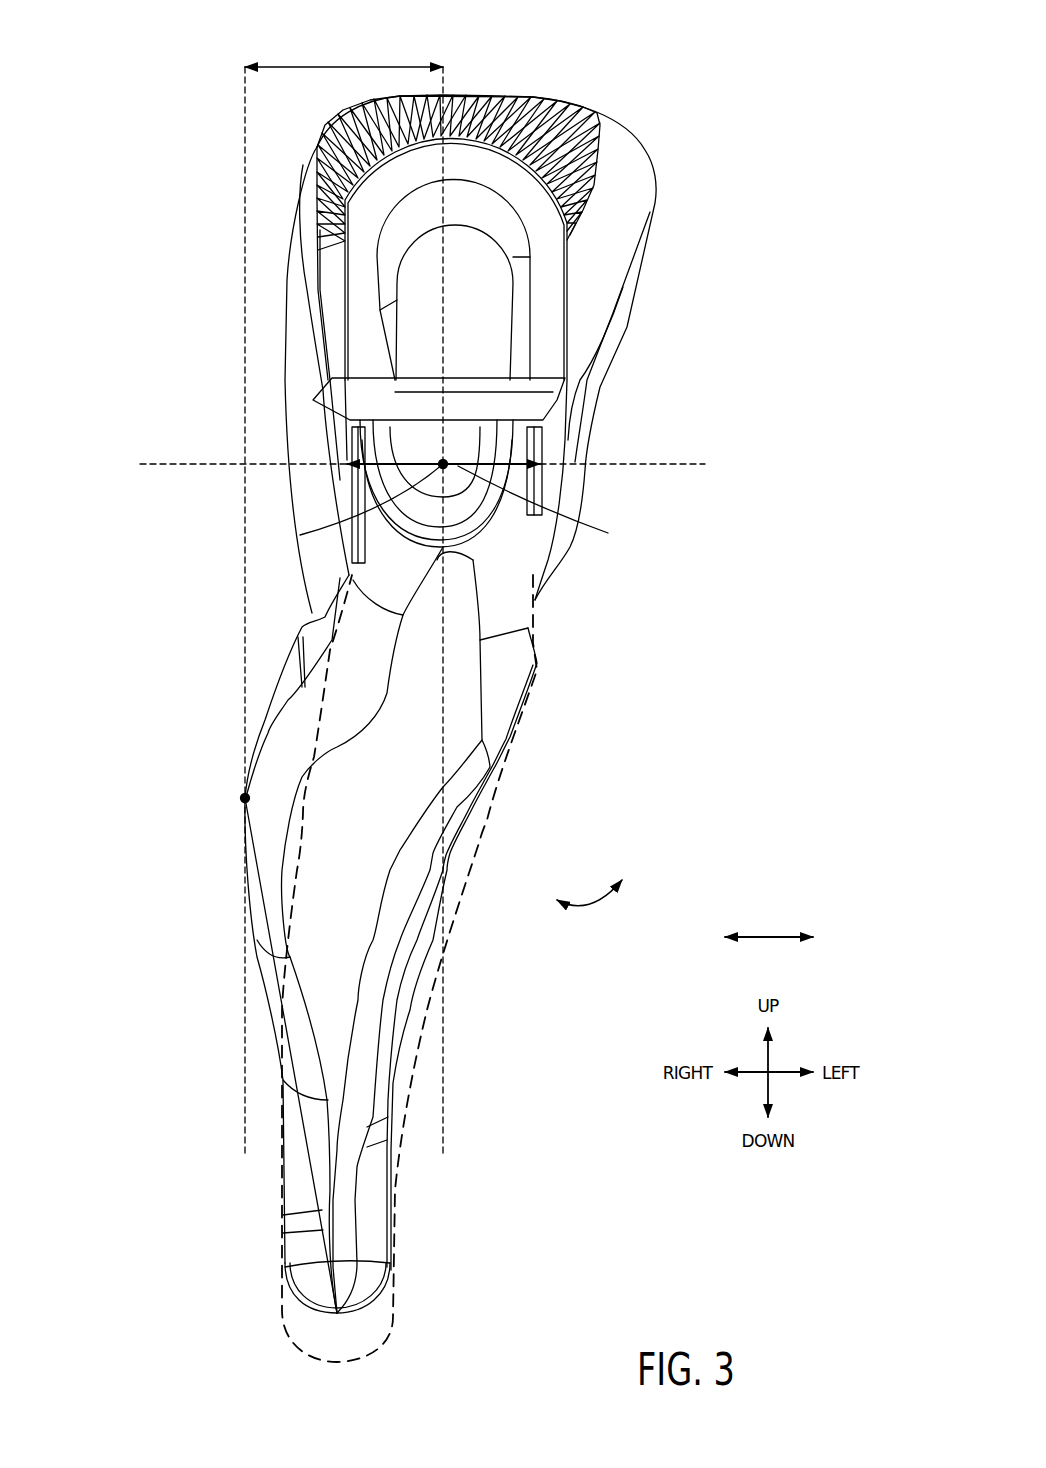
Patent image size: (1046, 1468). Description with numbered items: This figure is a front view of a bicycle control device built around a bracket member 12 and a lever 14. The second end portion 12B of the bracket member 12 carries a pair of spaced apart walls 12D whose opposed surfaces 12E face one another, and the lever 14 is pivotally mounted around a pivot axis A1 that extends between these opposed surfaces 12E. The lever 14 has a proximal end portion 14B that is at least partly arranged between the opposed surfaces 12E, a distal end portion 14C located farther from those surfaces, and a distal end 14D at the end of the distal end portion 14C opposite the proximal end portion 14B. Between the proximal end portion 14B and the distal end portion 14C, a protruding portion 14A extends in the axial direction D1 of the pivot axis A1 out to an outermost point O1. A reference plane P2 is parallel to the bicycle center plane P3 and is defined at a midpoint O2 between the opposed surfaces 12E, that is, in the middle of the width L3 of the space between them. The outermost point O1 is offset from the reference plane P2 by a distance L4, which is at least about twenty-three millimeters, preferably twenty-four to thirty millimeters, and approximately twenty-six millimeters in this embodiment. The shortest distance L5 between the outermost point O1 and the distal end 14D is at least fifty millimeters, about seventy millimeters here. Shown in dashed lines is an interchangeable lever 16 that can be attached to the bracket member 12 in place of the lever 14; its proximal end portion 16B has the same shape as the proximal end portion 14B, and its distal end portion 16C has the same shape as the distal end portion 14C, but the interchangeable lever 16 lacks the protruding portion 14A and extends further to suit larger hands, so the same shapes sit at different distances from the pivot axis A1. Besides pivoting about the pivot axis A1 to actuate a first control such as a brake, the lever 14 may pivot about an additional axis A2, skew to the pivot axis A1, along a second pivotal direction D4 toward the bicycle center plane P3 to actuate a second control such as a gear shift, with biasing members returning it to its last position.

The bracket member 12 is at (653, 227).
The second end portion 12B is at (592, 398).
The spaced apart walls 12D is at (345, 415).
The opposed surfaces 12E is at (542, 443).
The lever 14 is at (412, 1004).
The protruding portion 14A is at (185, 835).
The proximal end portion 14B is at (570, 610).
The distal end portion 14C is at (438, 1216).
The distal end 14D is at (337, 1313).
The interchangeable lever 16 is at (392, 1315).
The proximal end portion 16B is at (588, 573).
The distal end portion 16C is at (438, 1356).
The width L3 is at (545, 503).
The distance L4 is at (366, 62).
The shortest distance L5 is at (322, 1210).
The pivot axis A1 is at (409, 465).
The additional axis A2 is at (407, 505).
The outermost point O1 is at (245, 798).
The midpoint O2 is at (443, 462).
The reference plane P2 is at (446, 627).
The bicycle center plane P3 is at (245, 627).
The axial direction D1 is at (769, 923).
The second pivotal direction D4 is at (589, 910).